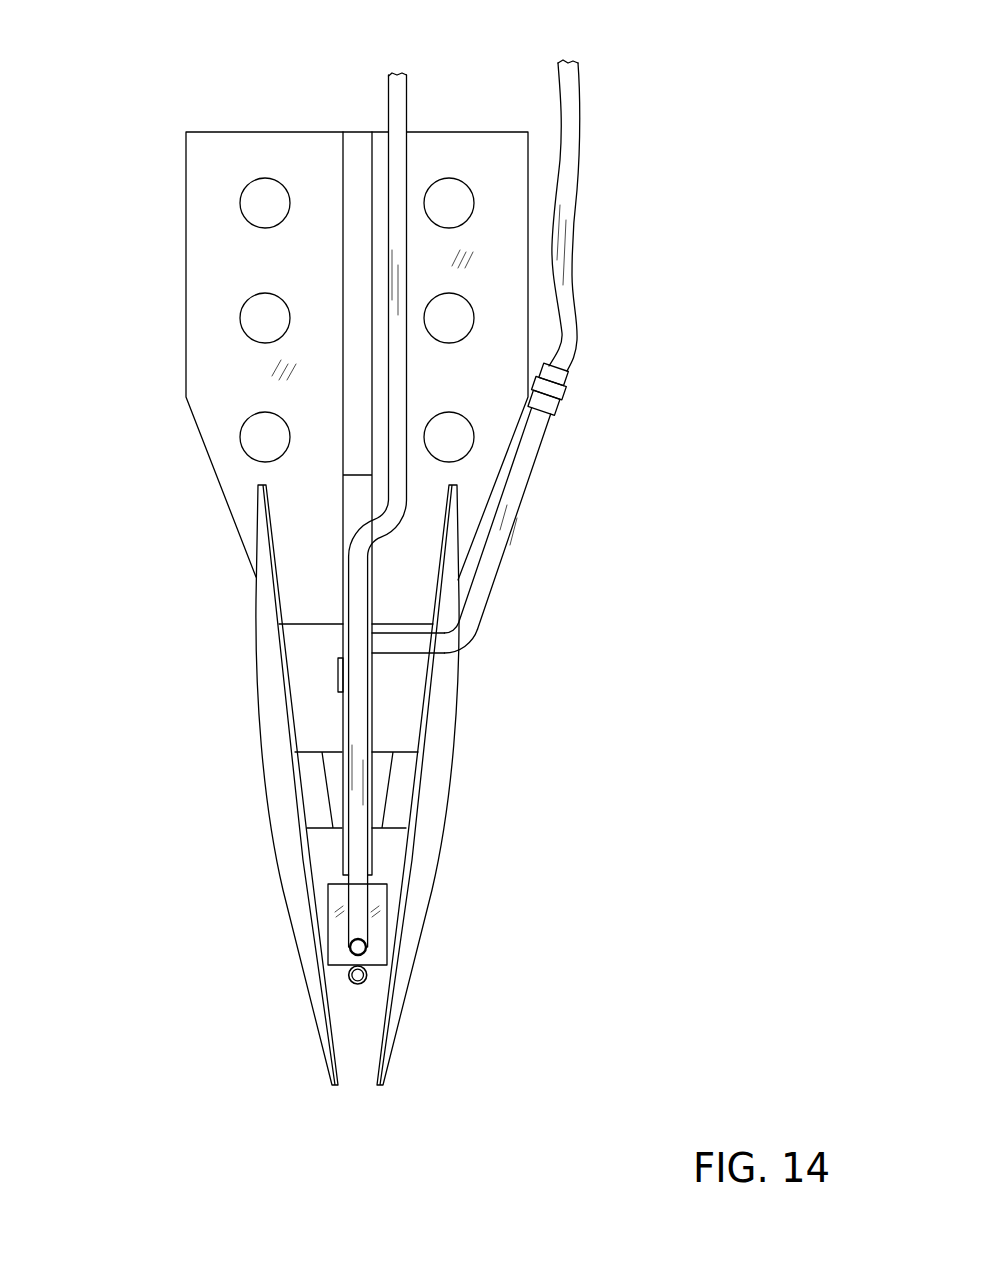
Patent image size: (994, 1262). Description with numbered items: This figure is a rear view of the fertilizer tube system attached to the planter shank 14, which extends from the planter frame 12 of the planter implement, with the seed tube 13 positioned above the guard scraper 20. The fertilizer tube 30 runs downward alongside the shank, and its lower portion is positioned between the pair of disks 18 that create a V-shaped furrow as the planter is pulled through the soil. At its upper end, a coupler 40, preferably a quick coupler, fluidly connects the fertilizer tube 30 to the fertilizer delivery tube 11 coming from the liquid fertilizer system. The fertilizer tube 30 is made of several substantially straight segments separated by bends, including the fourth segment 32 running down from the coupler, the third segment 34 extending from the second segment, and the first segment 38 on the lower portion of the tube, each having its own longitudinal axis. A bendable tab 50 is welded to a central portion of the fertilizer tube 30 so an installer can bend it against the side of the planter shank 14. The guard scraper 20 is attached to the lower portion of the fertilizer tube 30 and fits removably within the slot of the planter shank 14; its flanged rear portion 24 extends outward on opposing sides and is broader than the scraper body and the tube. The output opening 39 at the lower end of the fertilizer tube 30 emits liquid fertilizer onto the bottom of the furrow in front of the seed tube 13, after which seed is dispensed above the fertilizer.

The fertilizer delivery tube 11 is at (578, 153).
The planter frame 12 is at (163, 353).
The seed tube 13 is at (388, 99).
The planter shank 14 is at (281, 503).
The disks 18 is at (274, 868).
The guard scraper 20 is at (385, 925).
The rear portion 24 is at (337, 933).
The fertilizer tube 30 is at (509, 561).
The fourth segment 32 is at (538, 475).
The third segment 34 is at (408, 653).
The first segment 38 is at (372, 1016).
The output opening 39 is at (362, 983).
The coupler 40 is at (567, 400).
The tab 50 is at (338, 670).